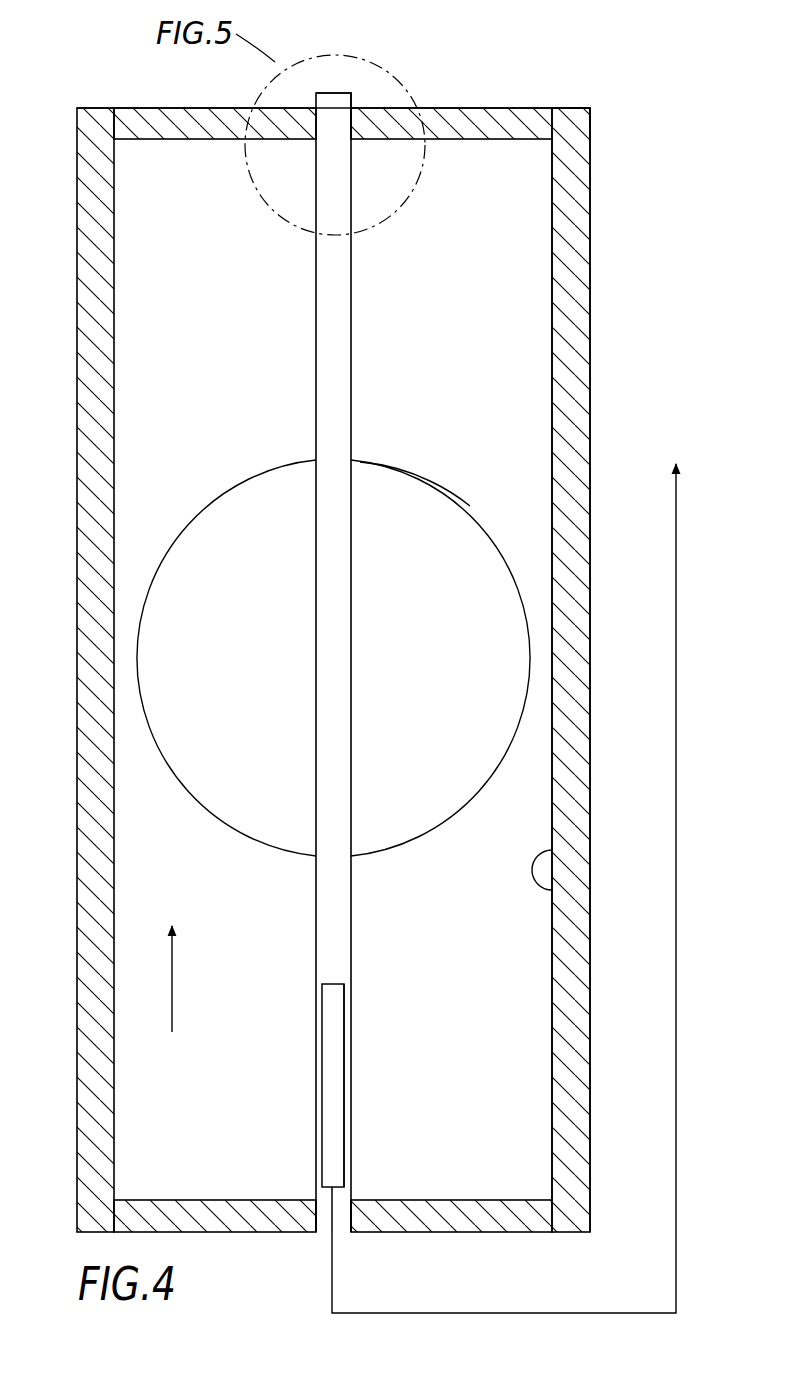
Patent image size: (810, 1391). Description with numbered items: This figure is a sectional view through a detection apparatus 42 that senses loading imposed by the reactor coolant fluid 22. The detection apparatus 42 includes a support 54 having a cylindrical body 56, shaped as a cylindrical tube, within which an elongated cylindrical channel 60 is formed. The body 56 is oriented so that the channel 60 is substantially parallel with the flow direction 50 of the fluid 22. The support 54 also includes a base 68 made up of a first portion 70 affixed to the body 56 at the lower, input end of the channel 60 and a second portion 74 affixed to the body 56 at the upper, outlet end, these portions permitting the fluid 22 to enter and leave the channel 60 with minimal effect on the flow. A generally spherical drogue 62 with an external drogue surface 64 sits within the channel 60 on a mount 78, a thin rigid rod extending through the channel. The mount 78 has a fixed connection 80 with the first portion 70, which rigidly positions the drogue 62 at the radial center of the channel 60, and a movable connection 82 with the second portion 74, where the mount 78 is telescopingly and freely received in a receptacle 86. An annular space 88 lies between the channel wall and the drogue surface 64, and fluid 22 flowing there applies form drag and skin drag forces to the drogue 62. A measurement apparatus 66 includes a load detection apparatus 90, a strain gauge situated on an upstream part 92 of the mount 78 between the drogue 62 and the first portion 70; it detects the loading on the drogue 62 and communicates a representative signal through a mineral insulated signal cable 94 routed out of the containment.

The fluid 22 is at (140, 330).
The detection apparatus 42 is at (388, 654).
The flow direction 50 is at (172, 975).
The support 54 is at (592, 277).
The cylindrical body 56 is at (592, 330).
The cylindrical channel 60 is at (540, 868).
The drogue 62 is at (386, 459).
The drogue surface 64 is at (421, 475).
The measurement apparatus 66 is at (320, 1230).
The base 68 is at (549, 106).
The first portion 70 is at (453, 1234).
The second portion 74 is at (483, 107).
The mount 78 is at (352, 664).
The fixed connection 80 is at (340, 1225).
The movable connection 82 is at (307, 108).
The receptacle 86 is at (352, 95).
The annular space 88 is at (124, 657).
The load detection apparatus 90 is at (344, 1030).
The upstream part 92 is at (351, 1078).
The signal cable 94 is at (676, 935).